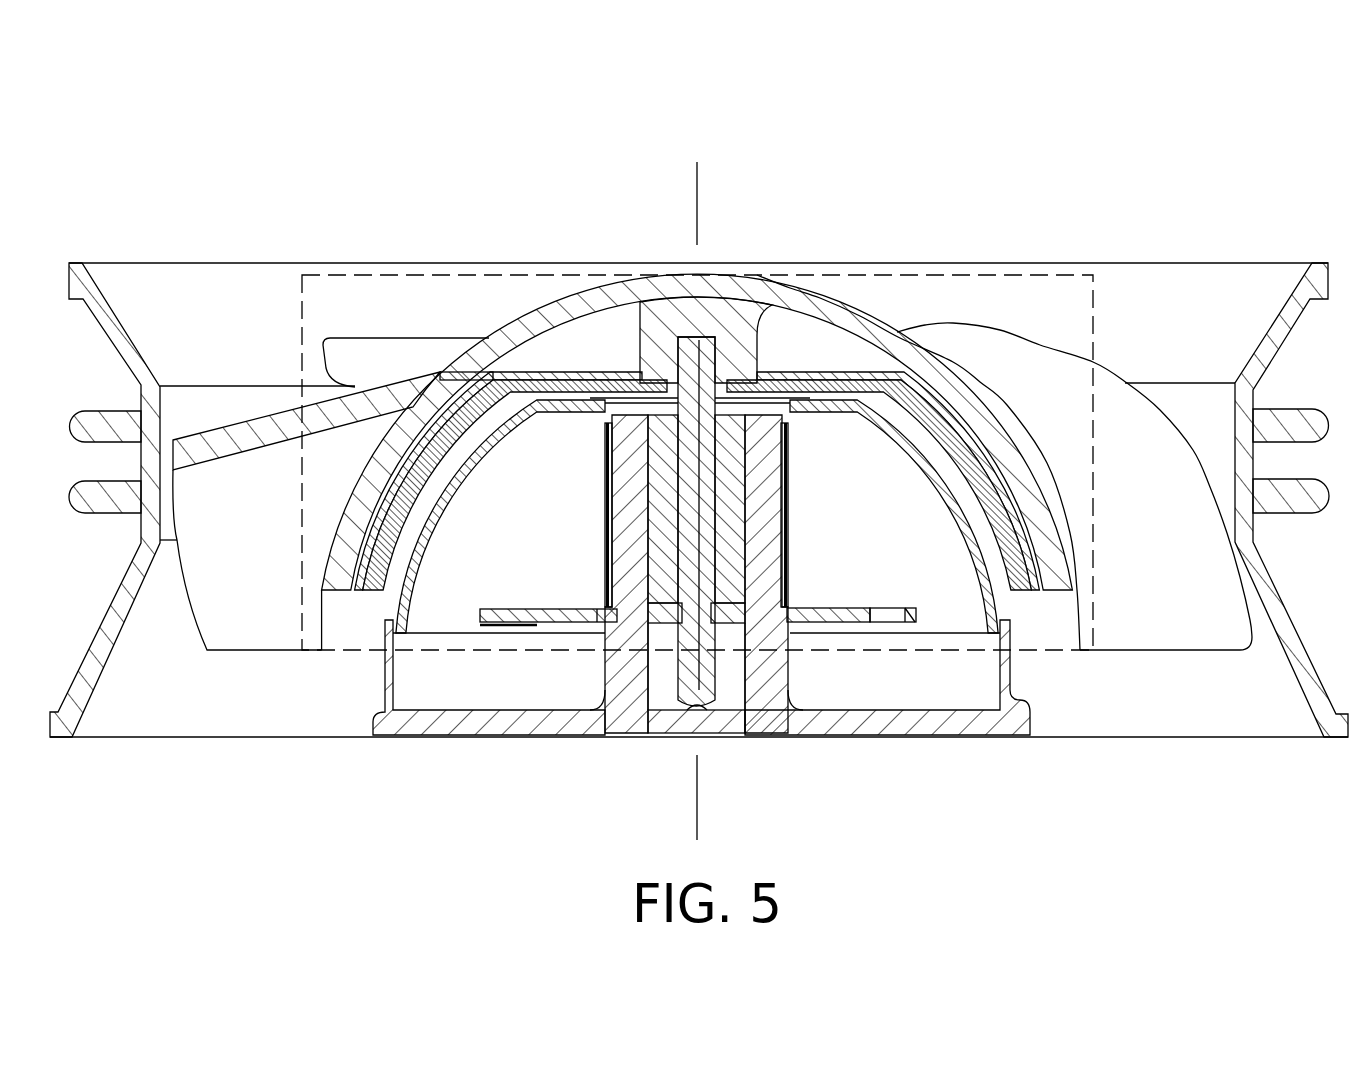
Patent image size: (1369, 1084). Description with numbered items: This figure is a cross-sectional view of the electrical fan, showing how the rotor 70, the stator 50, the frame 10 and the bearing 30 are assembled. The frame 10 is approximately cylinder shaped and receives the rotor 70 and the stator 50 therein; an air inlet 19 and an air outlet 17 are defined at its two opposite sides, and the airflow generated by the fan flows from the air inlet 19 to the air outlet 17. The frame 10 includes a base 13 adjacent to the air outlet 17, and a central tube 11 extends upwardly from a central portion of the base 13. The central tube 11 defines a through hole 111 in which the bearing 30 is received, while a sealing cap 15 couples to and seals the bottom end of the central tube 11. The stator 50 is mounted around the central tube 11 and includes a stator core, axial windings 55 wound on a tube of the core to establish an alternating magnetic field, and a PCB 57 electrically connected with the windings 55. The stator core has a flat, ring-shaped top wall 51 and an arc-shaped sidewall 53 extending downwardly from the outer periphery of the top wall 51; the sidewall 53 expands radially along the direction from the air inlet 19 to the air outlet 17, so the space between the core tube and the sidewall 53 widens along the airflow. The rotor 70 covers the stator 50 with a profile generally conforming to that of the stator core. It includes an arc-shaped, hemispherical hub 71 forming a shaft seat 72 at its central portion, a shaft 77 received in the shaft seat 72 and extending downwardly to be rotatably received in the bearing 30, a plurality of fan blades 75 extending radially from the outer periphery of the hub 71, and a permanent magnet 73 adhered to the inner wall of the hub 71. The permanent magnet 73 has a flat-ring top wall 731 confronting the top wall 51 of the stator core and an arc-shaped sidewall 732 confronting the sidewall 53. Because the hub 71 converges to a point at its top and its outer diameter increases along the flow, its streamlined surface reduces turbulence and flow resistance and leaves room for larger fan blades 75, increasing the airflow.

The frame 10 is at (133, 585).
The central tube 11 is at (630, 633).
The base 13 is at (430, 713).
The sealing cap 15 is at (690, 705).
The air outlet 17 is at (282, 688).
The air inlet 19 is at (233, 298).
The bearing 30 is at (770, 558).
The stator 50 is at (633, 168).
The top wall 51 is at (642, 372).
The sidewall 53 is at (597, 468).
The windings 55 is at (605, 463).
The PCB 57 is at (557, 610).
The rotor 70 is at (1062, 170).
The hub 71 is at (843, 318).
The shaft seat 72 is at (770, 313).
The permanent magnet 73 is at (1027, 210).
The top wall 731 is at (898, 415).
The sidewall 732 is at (968, 418).
The fan blades 75 is at (1033, 393).
The shaft 77 is at (716, 340).
The through hole 111 is at (738, 660).